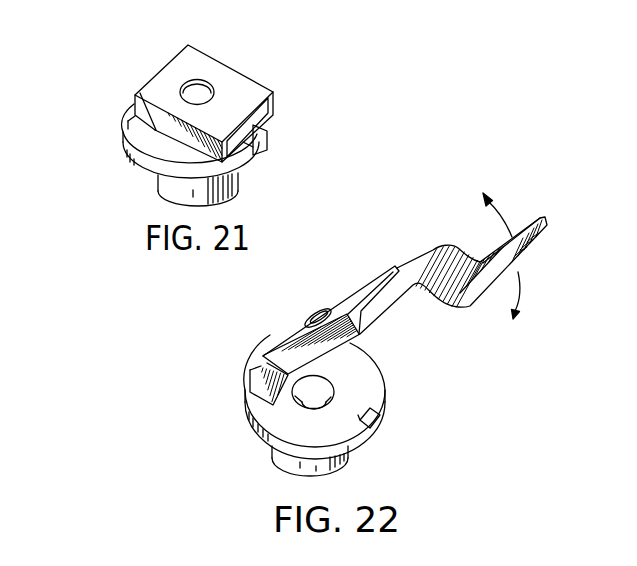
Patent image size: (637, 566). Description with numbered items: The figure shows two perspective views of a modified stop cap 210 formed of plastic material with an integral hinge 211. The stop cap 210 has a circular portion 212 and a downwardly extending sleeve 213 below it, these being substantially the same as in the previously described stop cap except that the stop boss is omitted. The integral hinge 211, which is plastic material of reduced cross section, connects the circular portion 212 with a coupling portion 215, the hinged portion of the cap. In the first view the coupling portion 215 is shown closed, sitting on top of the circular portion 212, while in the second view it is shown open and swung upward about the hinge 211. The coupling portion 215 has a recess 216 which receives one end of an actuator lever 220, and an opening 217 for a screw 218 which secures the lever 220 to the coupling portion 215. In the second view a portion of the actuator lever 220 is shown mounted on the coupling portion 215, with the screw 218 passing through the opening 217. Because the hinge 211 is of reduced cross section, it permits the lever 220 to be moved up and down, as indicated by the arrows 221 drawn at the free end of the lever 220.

In FIG. 21, the modified stop cap 210 is at (111, 129).
In FIG. 22, the modified stop cap 210 is at (242, 410).
In FIG. 21, the integral hinge 211 is at (137, 95).
In FIG. 22, the integral hinge 211 is at (260, 355).
In FIG. 21, the circular portion 212 is at (130, 158).
In FIG. 22, the circular portion 212 is at (253, 433).
In FIG. 21, the downwardly extending sleeve 213 is at (162, 188).
In FIG. 22, the downwardly extending sleeve 213 is at (290, 467).
In FIG. 21, the coupling portion 215 is at (253, 78).
In FIG. 22, the coupling portion 215 is at (391, 266).
In FIG. 21, the recess 216 is at (248, 126).
In FIG. 22, the recess 216 is at (369, 418).
In FIG. 21, the opening 217 is at (208, 85).
In FIG. 22, the opening 217 is at (313, 393).
In FIG. 22, the screw 218 is at (328, 307).
In FIG. 22, the actuator lever 220 is at (548, 228).
In FIG. 22, the arrows 221 is at (497, 219).